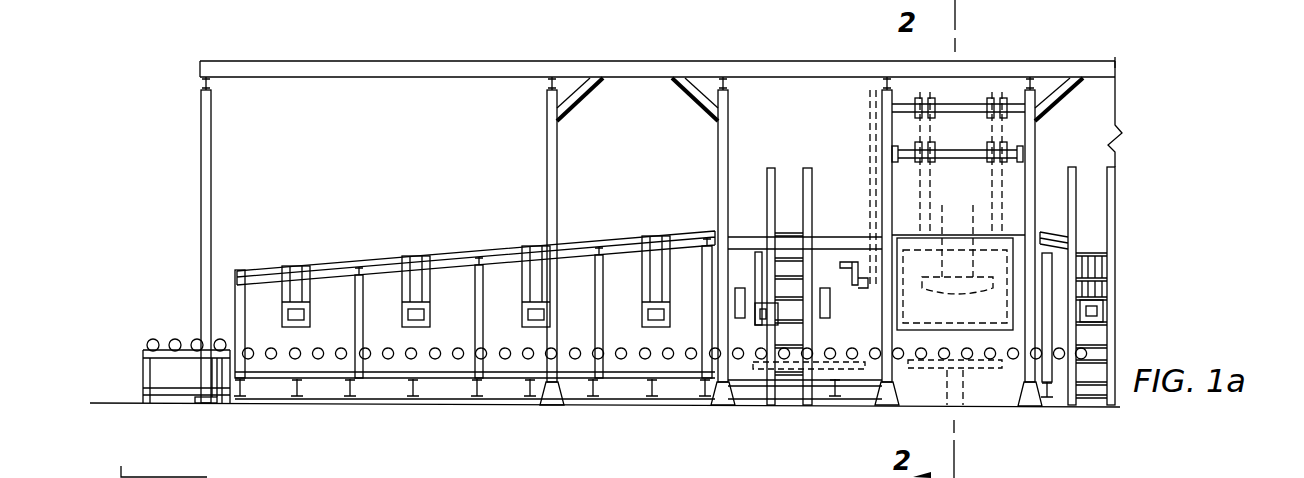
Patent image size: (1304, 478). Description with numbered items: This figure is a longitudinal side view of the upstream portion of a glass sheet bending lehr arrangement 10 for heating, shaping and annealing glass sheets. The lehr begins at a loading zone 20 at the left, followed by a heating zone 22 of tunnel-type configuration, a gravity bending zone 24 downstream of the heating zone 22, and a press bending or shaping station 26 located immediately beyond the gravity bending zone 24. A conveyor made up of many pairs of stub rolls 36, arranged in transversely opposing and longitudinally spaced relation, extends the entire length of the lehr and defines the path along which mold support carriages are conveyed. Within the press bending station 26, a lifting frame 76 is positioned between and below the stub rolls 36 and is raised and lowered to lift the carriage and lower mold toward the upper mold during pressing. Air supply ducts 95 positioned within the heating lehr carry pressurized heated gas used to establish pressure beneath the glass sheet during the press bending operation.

The processing apparatus with pipe manifold and tank 10 is at (963, 113).
The loading zone 20 is at (167, 254).
The heating zone 22 is at (390, 178).
The gravity bending zone 24 is at (812, 127).
The press bending station 26 is at (990, 50).
The stub rolls 36 is at (643, 354).
The lifting frame 76 is at (965, 393).
The air supply ducts 95 is at (875, 370).